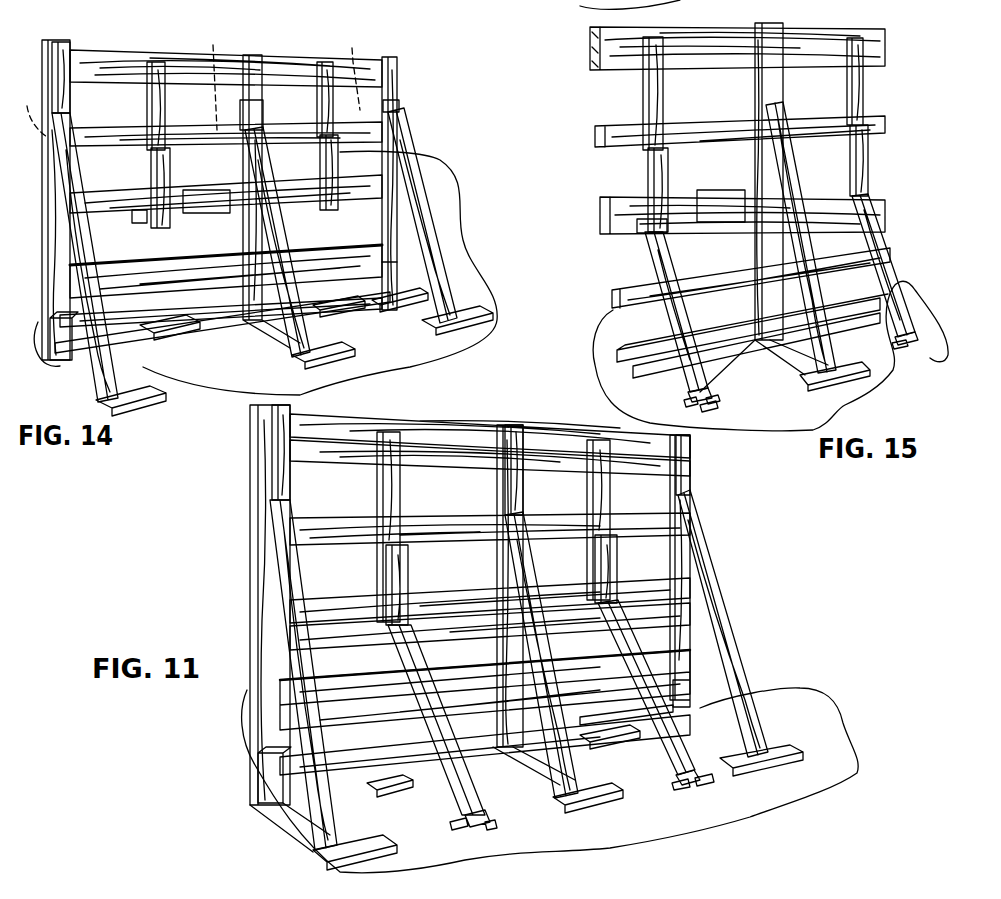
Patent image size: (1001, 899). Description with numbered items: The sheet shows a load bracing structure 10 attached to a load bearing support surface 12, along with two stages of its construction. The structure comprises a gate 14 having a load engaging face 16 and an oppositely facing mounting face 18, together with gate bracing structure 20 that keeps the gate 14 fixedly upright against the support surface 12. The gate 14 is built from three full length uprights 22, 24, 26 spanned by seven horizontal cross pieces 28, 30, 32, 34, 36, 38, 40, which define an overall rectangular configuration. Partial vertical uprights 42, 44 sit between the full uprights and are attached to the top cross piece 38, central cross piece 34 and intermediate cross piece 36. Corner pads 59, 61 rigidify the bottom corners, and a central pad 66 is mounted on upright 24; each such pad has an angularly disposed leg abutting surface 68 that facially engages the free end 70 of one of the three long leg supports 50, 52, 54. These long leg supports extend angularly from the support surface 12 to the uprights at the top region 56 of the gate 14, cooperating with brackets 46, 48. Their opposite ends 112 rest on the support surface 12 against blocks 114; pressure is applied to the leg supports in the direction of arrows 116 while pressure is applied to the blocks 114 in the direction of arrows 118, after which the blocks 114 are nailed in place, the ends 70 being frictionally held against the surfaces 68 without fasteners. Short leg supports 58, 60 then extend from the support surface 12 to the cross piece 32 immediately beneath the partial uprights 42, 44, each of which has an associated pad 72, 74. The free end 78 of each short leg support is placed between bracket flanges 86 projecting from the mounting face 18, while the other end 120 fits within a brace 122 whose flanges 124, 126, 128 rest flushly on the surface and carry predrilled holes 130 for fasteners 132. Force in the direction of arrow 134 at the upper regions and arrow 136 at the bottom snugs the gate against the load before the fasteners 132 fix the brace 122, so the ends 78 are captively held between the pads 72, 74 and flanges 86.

In FIG. 11, the load bracing structure 10 is at (708, 512).
In FIG. 14, the load bearing support surface 12 is at (275, 380).
In FIG. 15, the load bearing support surface 12 is at (857, 390).
In FIG. 11, the load bearing support surface 12 is at (745, 803).
In FIG. 11, the gate 14 is at (290, 440).
In FIG. 11, the load engaging face 16 is at (247, 505).
In FIG. 11, the mounting face 18 is at (462, 455).
In FIG. 11, the gate bracing structure 20 is at (565, 595).
In FIG. 11, the full length upright 22 is at (678, 552).
In FIG. 11, the full length upright 24 is at (497, 575).
In FIG. 11, the full length upright 26 is at (267, 593).
In FIG. 11, the horizontal cross piece 28 is at (343, 783).
In FIG. 11, the horizontal cross piece 30 is at (348, 721).
In FIG. 11, the horizontal cross piece 32 is at (367, 632).
In FIG. 11, the central cross piece 34 is at (367, 607).
In FIG. 11, the intermediate cross piece 36 is at (370, 537).
In FIG. 11, the top cross piece 38 is at (290, 452).
In FIG. 11, the horizontal cross piece 40 is at (292, 437).
In FIG. 11, the partial vertical upright 42 is at (392, 490).
In FIG. 11, the partial vertical upright 44 is at (605, 482).
In FIG. 11, the bracket 46 is at (400, 765).
In FIG. 11, the bracket 48 is at (603, 730).
In FIG. 14, the long leg support 50 is at (88, 262).
In FIG. 11, the long leg support 50 is at (300, 673).
In FIG. 14, the long leg support 52 is at (285, 232).
In FIG. 11, the long leg support 52 is at (540, 640).
In FIG. 14, the long leg support 54 is at (432, 175).
In FIG. 11, the long leg support 54 is at (716, 598).
In FIG. 11, the top region 56 is at (550, 460).
In FIG. 15, the short leg support 58 is at (614, 321).
In FIG. 11, the short leg support 58 is at (440, 733).
In FIG. 11, the corner pad 59 is at (268, 780).
In FIG. 15, the short leg support 60 is at (875, 215).
In FIG. 11, the short leg support 60 is at (680, 670).
In FIG. 11, the corner pad 61 is at (735, 708).
In FIG. 11, the central pad 66 is at (520, 435).
In FIG. 14, the leg abutting surface 68 is at (188, 84).
In FIG. 14, the free end 70 is at (70, 106).
In FIG. 11, the free end 70 is at (272, 490).
In FIG. 15, the pad 72 is at (648, 168).
In FIG. 15, the pad 74 is at (865, 153).
In FIG. 15, the free end 78 is at (880, 206).
In FIG. 11, the free end 78 is at (395, 640).
In FIG. 15, the flange 86 is at (693, 215).
In FIG. 14, the end 112 is at (468, 300).
In FIG. 14, the block 114 is at (345, 352).
In FIG. 14, the arrow 116 is at (118, 312).
In FIG. 14, the arrow 118 is at (338, 367).
In FIG. 15, the end 120 is at (698, 385).
In FIG. 15, the brace 122 is at (712, 398).
In FIG. 15, the brace flange 124 is at (685, 402).
In FIG. 15, the brace flange 126 is at (728, 408).
In FIG. 15, the brace flange 128 is at (725, 400).
In FIG. 15, the predrilled hole 130 is at (700, 412).
In FIG. 15, the fastener 132 is at (680, 392).
In FIG. 15, the arrow 134 is at (675, 250).
In FIG. 15, the arrow 136 is at (727, 418).